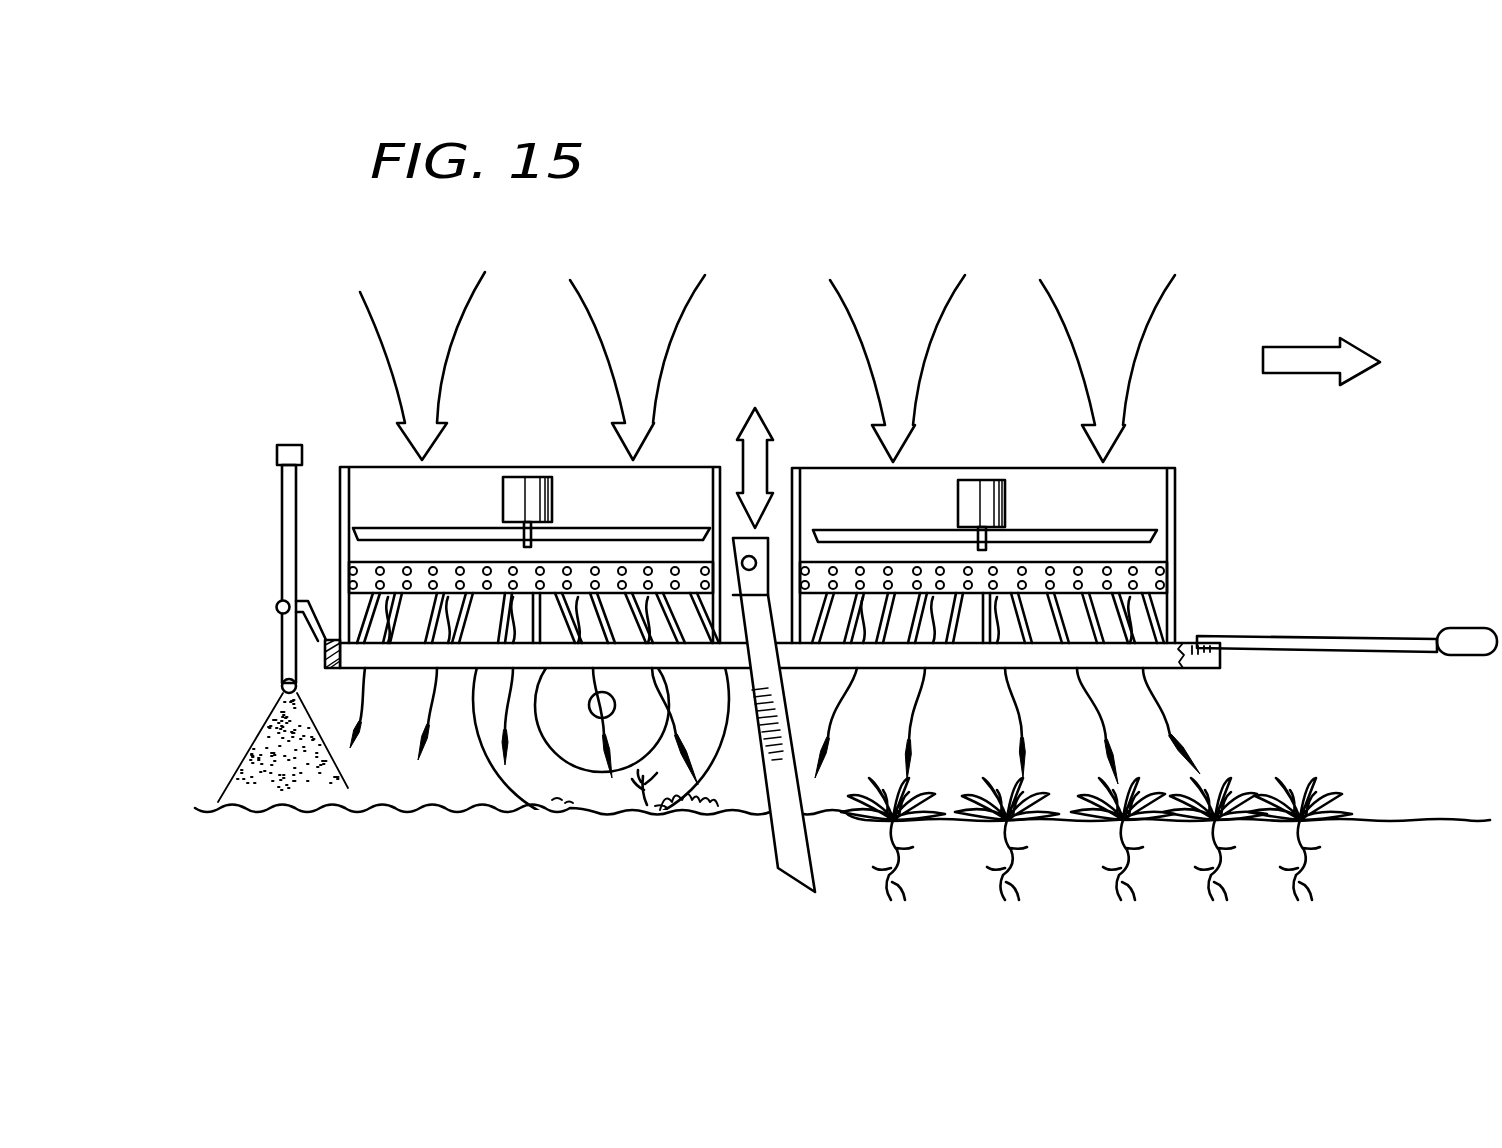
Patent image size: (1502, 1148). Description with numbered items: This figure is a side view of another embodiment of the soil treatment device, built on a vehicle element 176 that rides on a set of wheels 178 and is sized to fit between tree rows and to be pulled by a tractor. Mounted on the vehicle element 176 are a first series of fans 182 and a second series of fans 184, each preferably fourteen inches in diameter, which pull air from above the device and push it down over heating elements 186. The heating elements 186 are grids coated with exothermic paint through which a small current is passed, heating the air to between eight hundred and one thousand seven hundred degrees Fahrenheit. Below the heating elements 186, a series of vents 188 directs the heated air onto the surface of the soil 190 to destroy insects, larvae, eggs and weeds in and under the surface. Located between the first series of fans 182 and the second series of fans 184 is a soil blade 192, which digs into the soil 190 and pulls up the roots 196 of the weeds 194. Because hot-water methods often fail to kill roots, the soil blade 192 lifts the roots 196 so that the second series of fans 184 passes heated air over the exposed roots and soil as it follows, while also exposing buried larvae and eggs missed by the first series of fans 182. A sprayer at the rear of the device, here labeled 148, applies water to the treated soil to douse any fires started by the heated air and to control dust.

The spray nozzle assembly 148 is at (282, 636).
The vehicle element 176 is at (801, 410).
The wheels 178 is at (547, 773).
The first series of fans 182 is at (1033, 478).
The second series of fans 184 is at (566, 476).
The heating elements 186 is at (417, 567).
The vents 188 is at (483, 616).
The soil 190 is at (775, 699).
The soil blades 192 is at (788, 832).
The weeds 194 is at (1305, 810).
The roots 196 is at (647, 800).